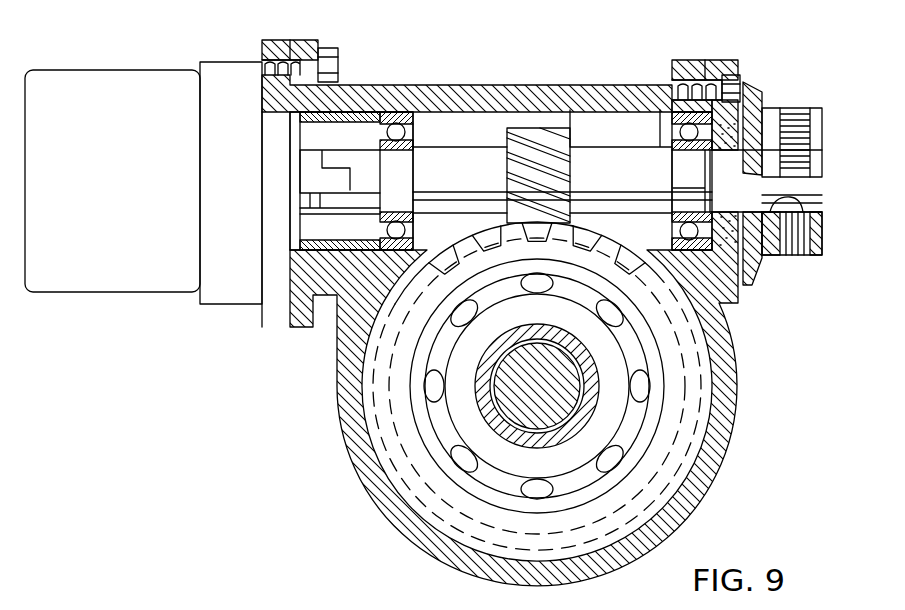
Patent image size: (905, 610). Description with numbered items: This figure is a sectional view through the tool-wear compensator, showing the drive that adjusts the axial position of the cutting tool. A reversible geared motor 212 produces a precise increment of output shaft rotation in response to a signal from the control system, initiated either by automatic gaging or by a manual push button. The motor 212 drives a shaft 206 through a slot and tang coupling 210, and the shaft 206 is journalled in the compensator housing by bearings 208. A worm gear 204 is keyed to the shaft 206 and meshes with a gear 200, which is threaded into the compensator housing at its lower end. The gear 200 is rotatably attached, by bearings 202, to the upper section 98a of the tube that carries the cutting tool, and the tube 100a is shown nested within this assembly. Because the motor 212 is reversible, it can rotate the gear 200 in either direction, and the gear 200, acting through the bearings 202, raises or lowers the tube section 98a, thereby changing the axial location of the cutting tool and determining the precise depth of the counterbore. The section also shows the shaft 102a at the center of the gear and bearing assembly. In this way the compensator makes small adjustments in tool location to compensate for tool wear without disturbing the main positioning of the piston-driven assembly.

The geared motor 212 is at (130, 75).
The slot and tang coupling 210 is at (358, 147).
The worm gear 204 is at (555, 135).
The bearings 208 is at (673, 113).
The shaft 206 is at (818, 193).
The gear 200 is at (605, 252).
The bearings 202 is at (620, 477).
The upper section of tube 98a is at (605, 458).
The tube 100a is at (600, 426).
The shaft 102a is at (537, 386).